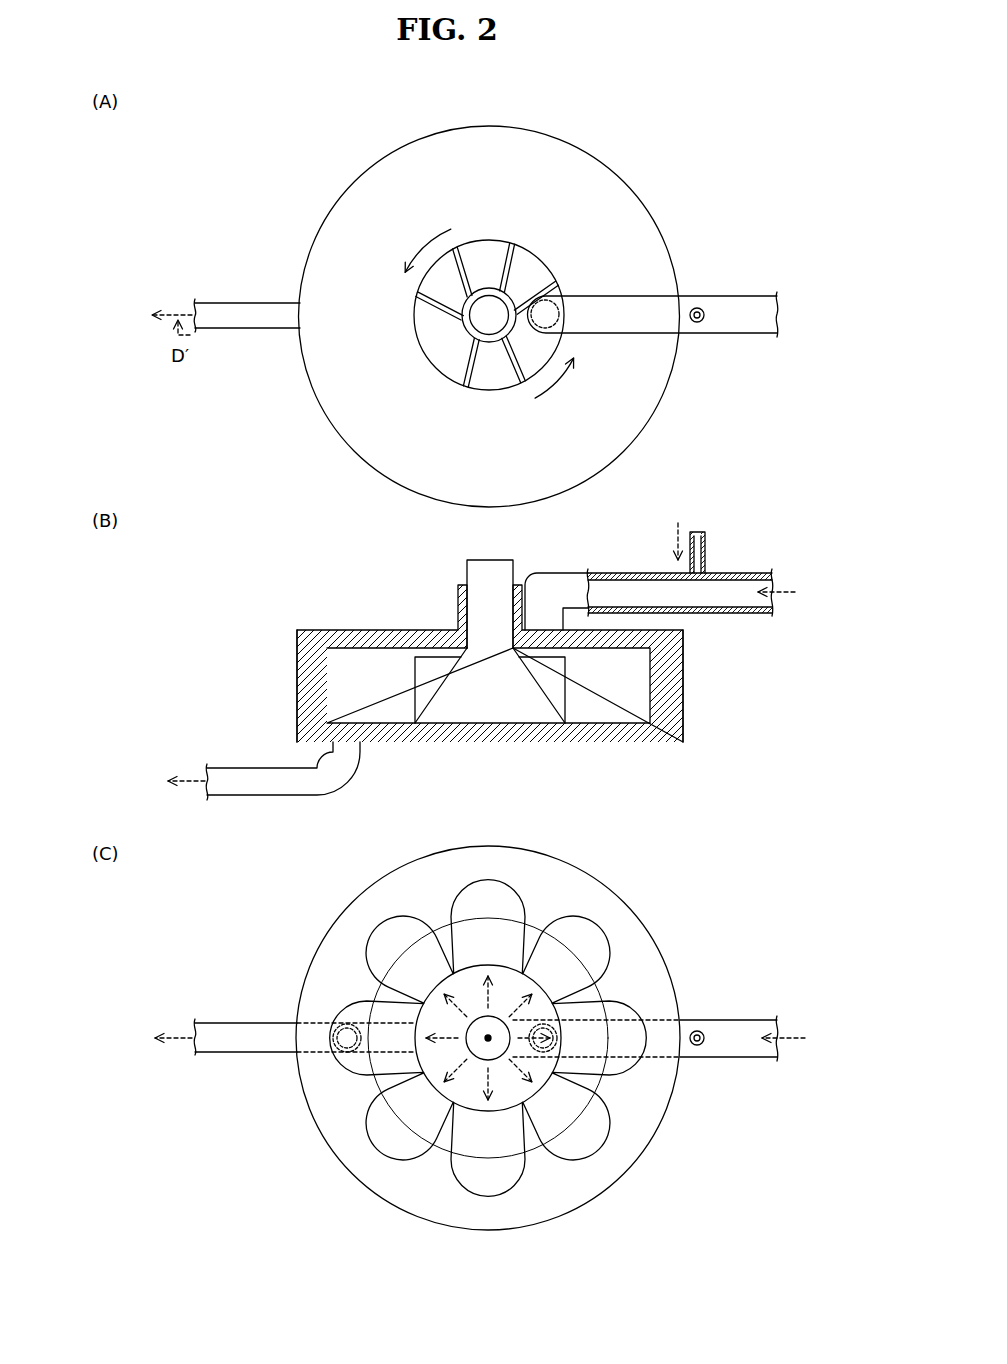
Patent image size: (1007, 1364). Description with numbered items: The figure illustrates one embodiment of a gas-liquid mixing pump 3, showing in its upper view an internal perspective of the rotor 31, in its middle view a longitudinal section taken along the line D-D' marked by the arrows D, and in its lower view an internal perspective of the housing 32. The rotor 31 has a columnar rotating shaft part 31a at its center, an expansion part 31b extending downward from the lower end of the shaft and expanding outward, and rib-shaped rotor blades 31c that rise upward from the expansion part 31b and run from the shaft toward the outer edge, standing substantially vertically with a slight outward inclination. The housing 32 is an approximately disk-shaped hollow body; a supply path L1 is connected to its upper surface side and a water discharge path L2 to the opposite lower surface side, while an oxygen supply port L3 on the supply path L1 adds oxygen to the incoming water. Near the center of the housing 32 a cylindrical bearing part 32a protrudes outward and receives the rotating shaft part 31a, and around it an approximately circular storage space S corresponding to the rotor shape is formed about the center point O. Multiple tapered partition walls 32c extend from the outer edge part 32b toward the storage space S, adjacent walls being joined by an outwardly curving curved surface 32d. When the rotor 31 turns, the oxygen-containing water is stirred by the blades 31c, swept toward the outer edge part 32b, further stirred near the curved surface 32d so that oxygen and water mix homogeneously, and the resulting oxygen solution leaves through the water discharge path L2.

The gas-liquid mixing pump 3 is at (320, 190).
The rotor 31 is at (552, 251).
The rotating shaft part 31a is at (481, 300).
The expansion part 31b is at (422, 317).
The rotor blade 31c is at (463, 266).
The housing 32 is at (615, 164).
The bearing part 32a is at (447, 377).
The outer edge part 32b is at (297, 684).
The partition wall 32c is at (447, 940).
The curved surface 32d is at (378, 928).
The supply path L1 is at (735, 295).
The water discharge path L2 is at (233, 329).
The oxygen supply port L3 is at (697, 322).
The line D-D' D is at (797, 320).
The center of rotation O is at (487, 1033).
The storage space S is at (452, 1050).